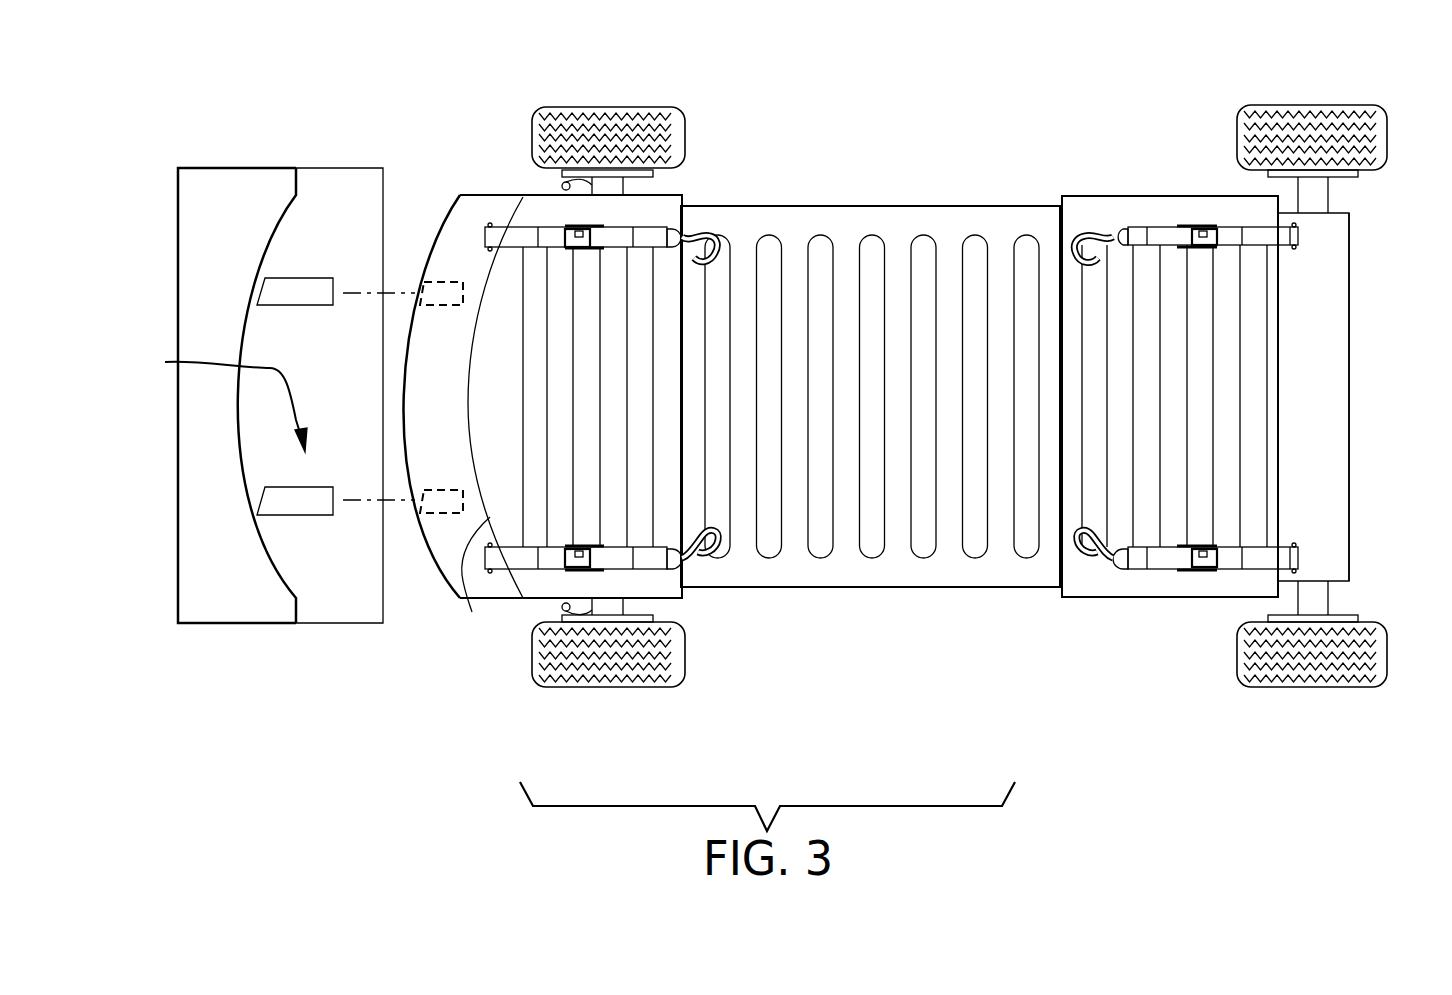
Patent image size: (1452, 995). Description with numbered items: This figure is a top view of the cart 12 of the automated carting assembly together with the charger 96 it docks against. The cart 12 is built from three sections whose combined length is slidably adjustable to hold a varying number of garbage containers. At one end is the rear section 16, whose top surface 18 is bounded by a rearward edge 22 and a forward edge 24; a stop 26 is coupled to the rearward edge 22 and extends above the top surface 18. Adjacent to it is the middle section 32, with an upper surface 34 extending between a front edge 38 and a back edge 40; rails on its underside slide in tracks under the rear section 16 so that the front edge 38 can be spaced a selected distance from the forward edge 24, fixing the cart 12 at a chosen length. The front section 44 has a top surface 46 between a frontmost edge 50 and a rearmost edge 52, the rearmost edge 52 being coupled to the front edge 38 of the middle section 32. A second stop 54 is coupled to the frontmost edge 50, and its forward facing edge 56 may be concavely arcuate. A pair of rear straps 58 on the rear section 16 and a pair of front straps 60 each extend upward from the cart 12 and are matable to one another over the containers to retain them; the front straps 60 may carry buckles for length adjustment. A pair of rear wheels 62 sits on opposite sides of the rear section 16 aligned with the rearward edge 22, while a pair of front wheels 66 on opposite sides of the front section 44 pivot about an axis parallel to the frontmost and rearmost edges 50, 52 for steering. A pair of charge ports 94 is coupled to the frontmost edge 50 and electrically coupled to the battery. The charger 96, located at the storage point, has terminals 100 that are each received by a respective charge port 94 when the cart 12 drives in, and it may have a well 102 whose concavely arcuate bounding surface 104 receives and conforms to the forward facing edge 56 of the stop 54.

The cart 12 is at (951, 172).
The rear section 16 is at (1163, 598).
The top surface 18 is at (1142, 207).
The rearward edge 22 is at (1277, 355).
The forward edge 24 is at (1060, 288).
The stop 26 is at (1333, 319).
The middle section 32 is at (902, 587).
The upper surface 34 is at (977, 567).
The front edge 38 is at (683, 473).
The back edge 40 is at (1060, 570).
The front section 44 is at (657, 195).
The top surface 46 is at (553, 280).
The frontmost edge 50 is at (460, 598).
The rearmost edge 52 is at (681, 323).
The stop 54 is at (430, 282).
The forward facing edge 56 is at (448, 570).
The rear straps 58 is at (1232, 227).
The front straps 60 is at (550, 227).
The rear wheels 62 is at (1300, 105).
The front wheels 66 is at (625, 107).
The charge ports 94 is at (438, 282).
The charger 96 is at (280, 168).
The terminals 100 is at (309, 278).
The well 102 is at (203, 398).
The bounding surface 104 is at (250, 477).